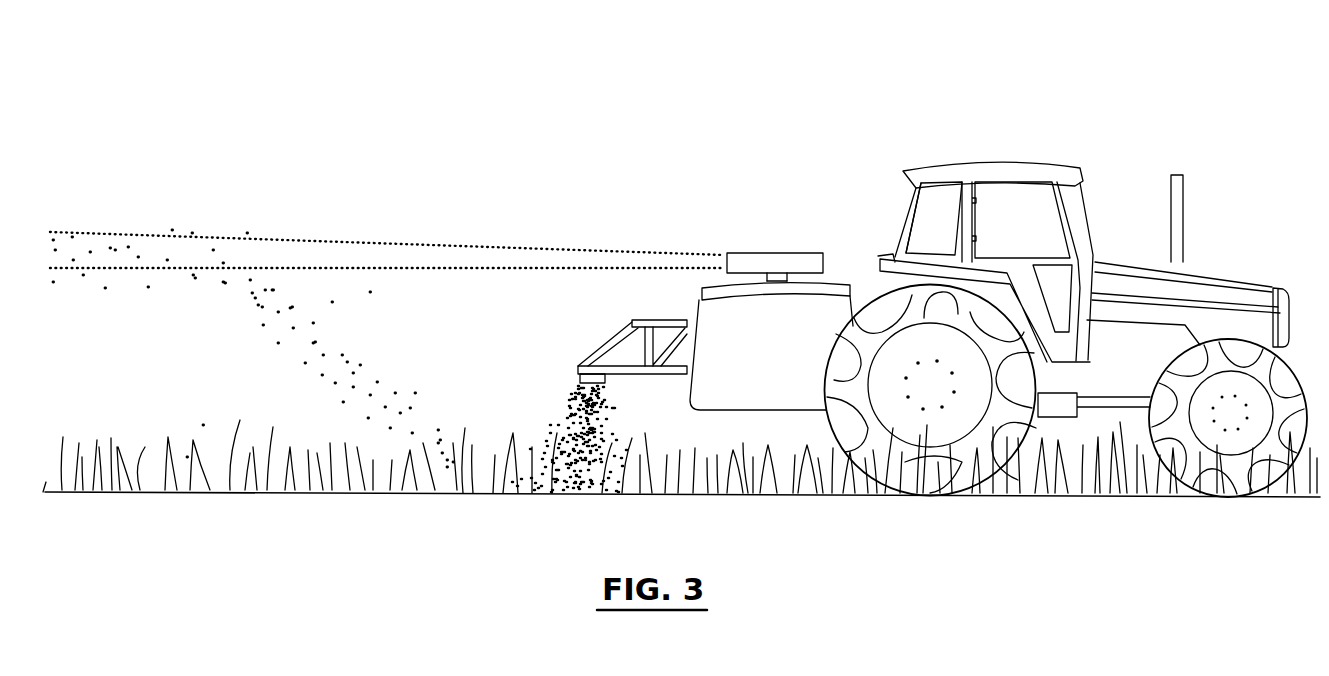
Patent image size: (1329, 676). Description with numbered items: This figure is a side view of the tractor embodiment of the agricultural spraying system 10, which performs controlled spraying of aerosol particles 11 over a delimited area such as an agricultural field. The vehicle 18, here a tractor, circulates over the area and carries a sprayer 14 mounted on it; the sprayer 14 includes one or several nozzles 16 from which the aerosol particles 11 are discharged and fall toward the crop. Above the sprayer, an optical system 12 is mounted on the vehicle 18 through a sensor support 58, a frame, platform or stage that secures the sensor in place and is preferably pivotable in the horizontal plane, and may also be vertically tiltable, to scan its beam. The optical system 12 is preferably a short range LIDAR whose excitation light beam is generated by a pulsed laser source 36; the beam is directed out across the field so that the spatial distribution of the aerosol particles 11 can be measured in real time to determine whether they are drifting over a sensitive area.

The agricultural spraying system 10 is at (856, 115).
The aerosol particles 11 is at (155, 255).
The optical system 12 is at (737, 235).
The sprayer 14 is at (586, 334).
The nozzles 16 is at (597, 376).
The vehicle 18 is at (998, 151).
The laser source 36 is at (488, 257).
The sensor support 58 is at (775, 283).